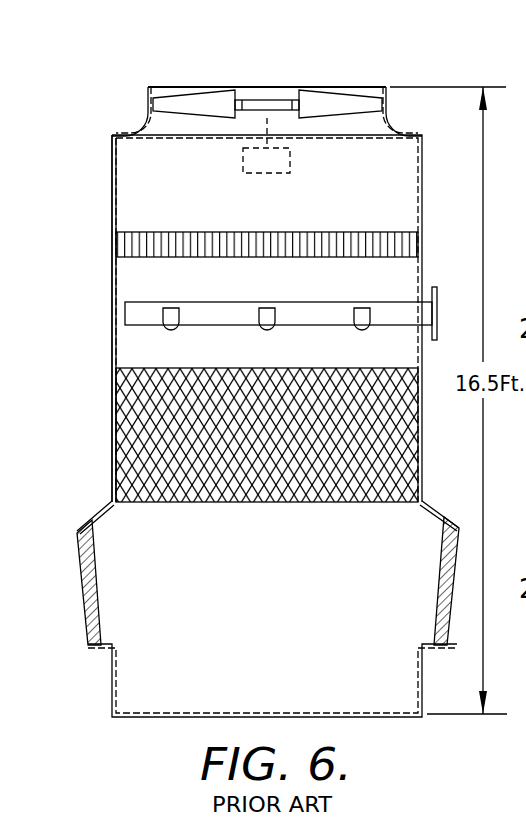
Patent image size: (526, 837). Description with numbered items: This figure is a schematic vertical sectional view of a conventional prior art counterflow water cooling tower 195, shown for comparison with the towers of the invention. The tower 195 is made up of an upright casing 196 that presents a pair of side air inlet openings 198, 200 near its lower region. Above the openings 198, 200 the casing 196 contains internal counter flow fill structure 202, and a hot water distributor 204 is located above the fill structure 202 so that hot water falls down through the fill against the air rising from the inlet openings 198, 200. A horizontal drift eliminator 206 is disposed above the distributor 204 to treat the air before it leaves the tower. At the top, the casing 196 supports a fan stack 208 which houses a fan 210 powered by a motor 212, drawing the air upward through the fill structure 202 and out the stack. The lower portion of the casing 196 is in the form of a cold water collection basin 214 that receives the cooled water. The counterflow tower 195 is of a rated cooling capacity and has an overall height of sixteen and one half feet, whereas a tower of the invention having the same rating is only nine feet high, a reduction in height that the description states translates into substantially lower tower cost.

The counterflow tower 195 is at (167, 68).
The upright casing 196 is at (112, 345).
The side air inlet opening 198 is at (97, 590).
The side air inlet opening 200 is at (437, 607).
The counter flow fill structure 202 is at (255, 503).
The hot water distributor 204 is at (281, 300).
The horizontal drift eliminator 206 is at (178, 235).
The fan stack 208 is at (148, 113).
The fan 210 is at (279, 103).
The motor 212 is at (287, 175).
The cold water collection basin 214 is at (172, 717).